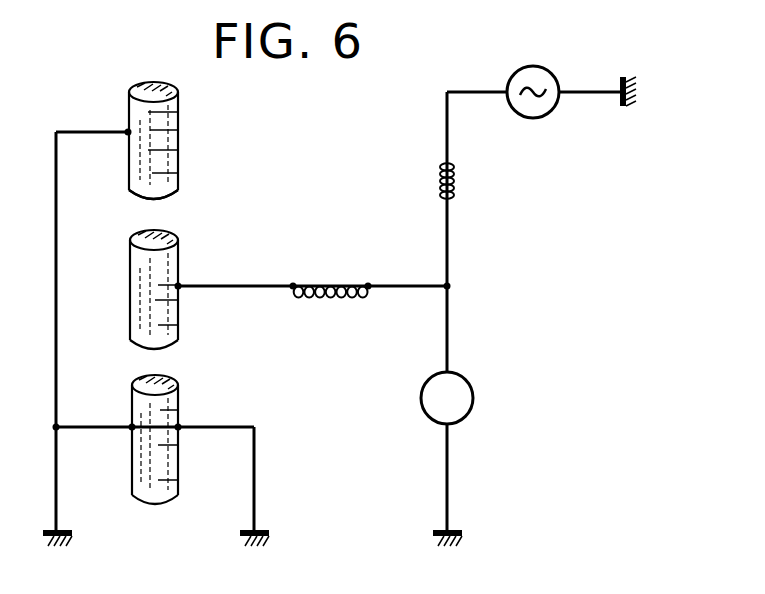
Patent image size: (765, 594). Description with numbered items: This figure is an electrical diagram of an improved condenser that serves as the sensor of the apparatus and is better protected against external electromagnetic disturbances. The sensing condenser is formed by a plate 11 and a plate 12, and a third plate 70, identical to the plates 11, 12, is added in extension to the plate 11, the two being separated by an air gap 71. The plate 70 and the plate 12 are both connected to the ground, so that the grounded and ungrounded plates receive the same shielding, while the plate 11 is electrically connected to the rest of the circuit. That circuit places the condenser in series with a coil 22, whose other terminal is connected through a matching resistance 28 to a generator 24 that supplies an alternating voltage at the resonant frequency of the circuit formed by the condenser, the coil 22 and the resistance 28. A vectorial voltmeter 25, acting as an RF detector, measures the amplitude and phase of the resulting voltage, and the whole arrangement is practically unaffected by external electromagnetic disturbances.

The third plate 70 is at (178, 132).
The air gap 71 is at (163, 214).
The plate 11 is at (178, 316).
The plate 12 is at (178, 393).
The coil 22 is at (328, 282).
The matching resistance 28 is at (454, 181).
The generator 24 is at (545, 117).
The vectorial voltmeter 25 is at (473, 397).